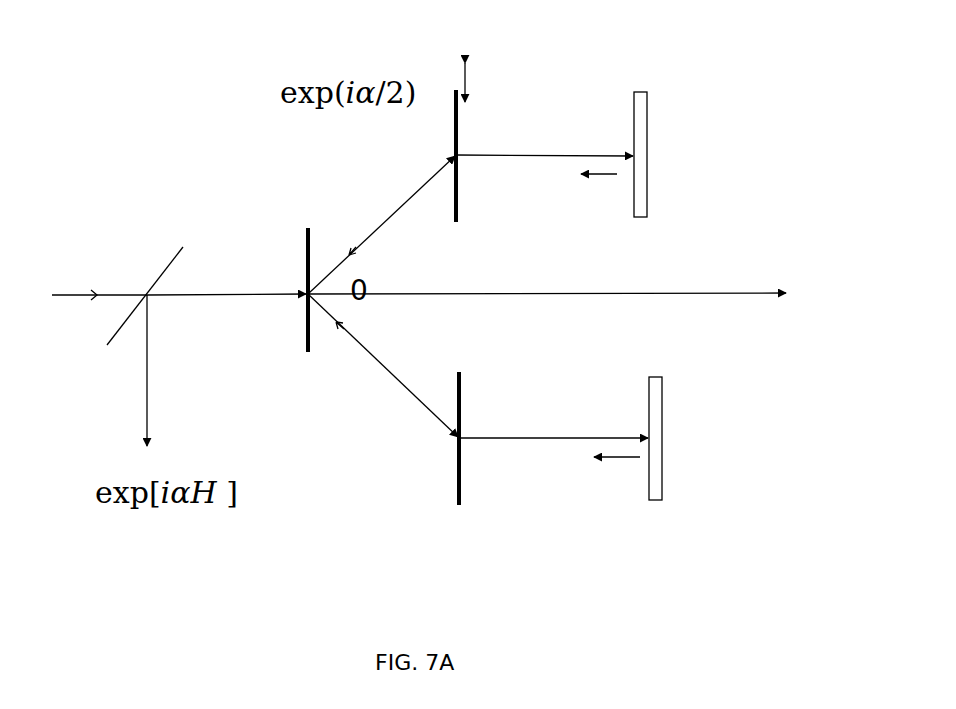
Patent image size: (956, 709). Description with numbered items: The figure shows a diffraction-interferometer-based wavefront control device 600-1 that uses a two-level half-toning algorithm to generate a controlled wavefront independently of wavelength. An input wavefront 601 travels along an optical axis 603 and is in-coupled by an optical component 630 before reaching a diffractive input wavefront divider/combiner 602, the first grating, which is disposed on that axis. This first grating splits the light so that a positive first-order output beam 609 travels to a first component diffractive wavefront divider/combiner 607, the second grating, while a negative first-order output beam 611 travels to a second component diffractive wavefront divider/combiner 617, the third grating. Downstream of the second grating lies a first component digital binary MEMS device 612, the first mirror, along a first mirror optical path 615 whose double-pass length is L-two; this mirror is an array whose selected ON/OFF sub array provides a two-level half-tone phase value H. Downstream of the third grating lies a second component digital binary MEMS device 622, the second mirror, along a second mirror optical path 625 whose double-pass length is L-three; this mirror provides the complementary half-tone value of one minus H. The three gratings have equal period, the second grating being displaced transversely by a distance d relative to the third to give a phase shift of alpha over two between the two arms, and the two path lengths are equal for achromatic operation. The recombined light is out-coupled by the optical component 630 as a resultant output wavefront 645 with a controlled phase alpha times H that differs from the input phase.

The wavefront control device 600-1 is at (94, 91).
The input wavefront 601 is at (99, 284).
The input wavefront divider/combiner 602 is at (296, 297).
The optical axis 603 is at (226, 284).
The first component diffractive wavefront divider/combiner 607 is at (482, 166).
The positive nth-order output beam 609 is at (381, 225).
The negative nth-order output beam 611 is at (383, 365).
The first component digital binary MEMS device 612 is at (693, 143).
The M1 optical path 615 is at (544, 153).
The second component diffractive wavefront divider/combiner 617 is at (469, 462).
The second component digital binary MEMS device 622 is at (738, 433).
The M2 optical path 625 is at (553, 435).
The optical component 630 is at (158, 287).
The resultant output wavefront 645 is at (168, 374).